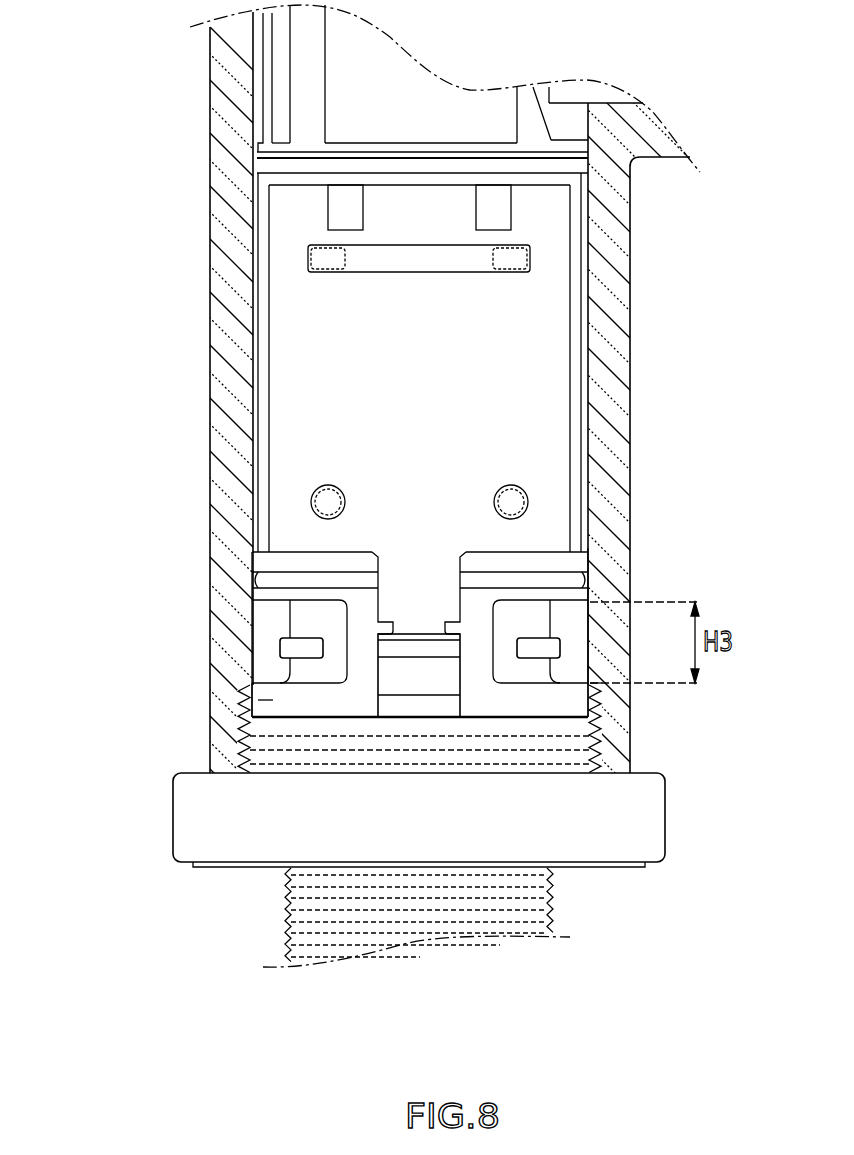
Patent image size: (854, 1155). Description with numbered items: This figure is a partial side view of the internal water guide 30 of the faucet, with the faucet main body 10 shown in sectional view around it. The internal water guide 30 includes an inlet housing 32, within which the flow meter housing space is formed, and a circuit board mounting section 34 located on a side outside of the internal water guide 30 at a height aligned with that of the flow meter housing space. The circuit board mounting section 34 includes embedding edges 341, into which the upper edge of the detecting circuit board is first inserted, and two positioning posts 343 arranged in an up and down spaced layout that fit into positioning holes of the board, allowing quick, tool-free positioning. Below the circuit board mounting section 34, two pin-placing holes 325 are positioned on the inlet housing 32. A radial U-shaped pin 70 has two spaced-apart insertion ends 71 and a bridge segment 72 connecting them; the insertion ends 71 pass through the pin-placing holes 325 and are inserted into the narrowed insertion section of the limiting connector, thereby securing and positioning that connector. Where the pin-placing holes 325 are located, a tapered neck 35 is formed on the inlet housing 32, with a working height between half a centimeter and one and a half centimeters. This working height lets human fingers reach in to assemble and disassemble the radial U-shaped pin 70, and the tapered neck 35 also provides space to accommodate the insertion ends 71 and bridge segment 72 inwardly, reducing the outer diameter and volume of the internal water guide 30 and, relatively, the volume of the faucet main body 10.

The faucet main body 10 is at (193, 221).
The internal water guide 30 is at (530, 410).
The inlet housing 32 is at (273, 699).
The pin-placing holes 325 is at (300, 637).
The circuit board mounting section 34 is at (357, 352).
The embedding edges 341 is at (337, 213).
The positioning posts 343 is at (322, 490).
The tapered neck 35 is at (288, 620).
The radial U-shaped pin 70 is at (550, 639).
The insertion ends 71 is at (280, 646).
The bridge segment 72 is at (597, 680).